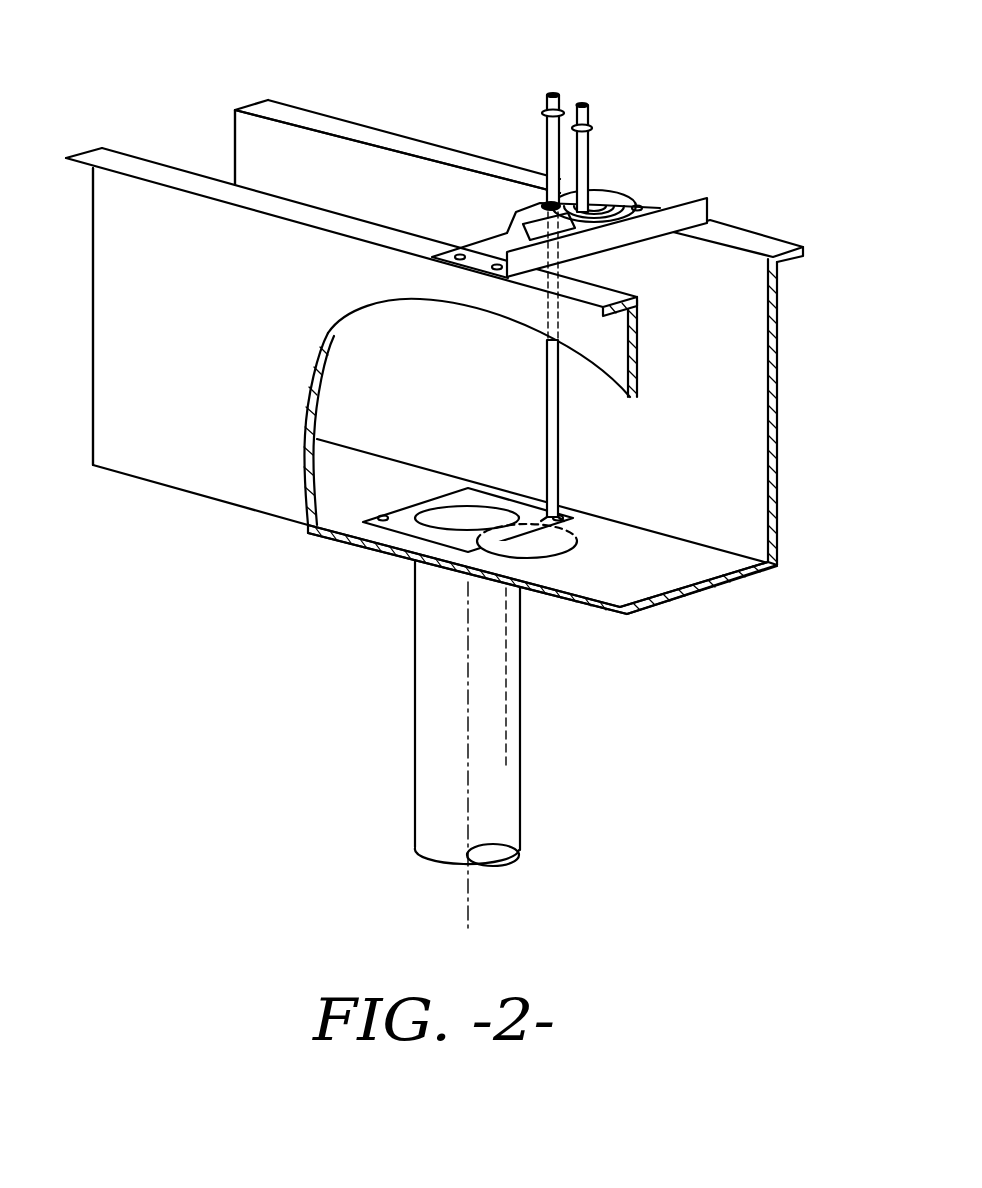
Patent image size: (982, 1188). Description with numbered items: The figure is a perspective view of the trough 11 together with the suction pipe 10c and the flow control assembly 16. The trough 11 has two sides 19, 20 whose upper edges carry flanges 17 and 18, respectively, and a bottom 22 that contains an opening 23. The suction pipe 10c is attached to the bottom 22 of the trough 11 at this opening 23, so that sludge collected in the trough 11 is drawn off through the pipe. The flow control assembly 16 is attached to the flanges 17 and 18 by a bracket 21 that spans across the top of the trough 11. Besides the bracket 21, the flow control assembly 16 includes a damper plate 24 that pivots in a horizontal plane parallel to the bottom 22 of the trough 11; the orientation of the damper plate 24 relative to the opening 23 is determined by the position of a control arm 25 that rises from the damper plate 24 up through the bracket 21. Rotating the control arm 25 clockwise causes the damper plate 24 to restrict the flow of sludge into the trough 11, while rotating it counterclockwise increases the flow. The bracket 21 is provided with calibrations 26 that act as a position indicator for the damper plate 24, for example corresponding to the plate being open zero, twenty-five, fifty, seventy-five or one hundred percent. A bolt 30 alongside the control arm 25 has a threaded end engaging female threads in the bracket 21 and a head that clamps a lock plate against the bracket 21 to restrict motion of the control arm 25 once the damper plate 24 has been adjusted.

The suction pipe 10c is at (522, 752).
The trough 11 is at (253, 465).
The flow control assembly 16 is at (716, 208).
The flange 17 is at (167, 177).
The flange 18 is at (307, 120).
The side 19 is at (170, 430).
The side 20 is at (388, 172).
The bracket 21 is at (630, 203).
The bottom 22 is at (680, 568).
The opening 23 is at (388, 538).
The damper plate 24 is at (562, 542).
The control arm 25 is at (552, 92).
The calibrations 26 is at (610, 197).
The bolt 30 is at (590, 97).